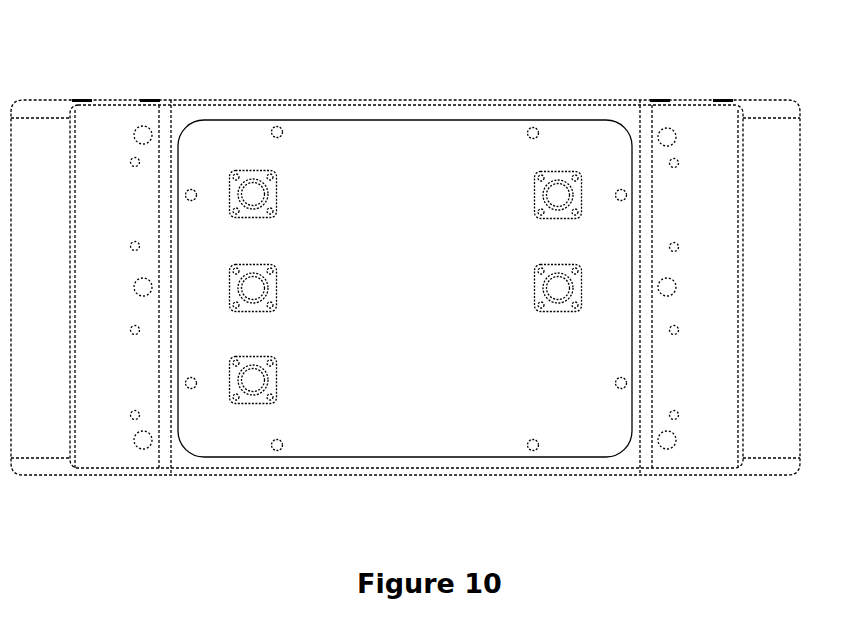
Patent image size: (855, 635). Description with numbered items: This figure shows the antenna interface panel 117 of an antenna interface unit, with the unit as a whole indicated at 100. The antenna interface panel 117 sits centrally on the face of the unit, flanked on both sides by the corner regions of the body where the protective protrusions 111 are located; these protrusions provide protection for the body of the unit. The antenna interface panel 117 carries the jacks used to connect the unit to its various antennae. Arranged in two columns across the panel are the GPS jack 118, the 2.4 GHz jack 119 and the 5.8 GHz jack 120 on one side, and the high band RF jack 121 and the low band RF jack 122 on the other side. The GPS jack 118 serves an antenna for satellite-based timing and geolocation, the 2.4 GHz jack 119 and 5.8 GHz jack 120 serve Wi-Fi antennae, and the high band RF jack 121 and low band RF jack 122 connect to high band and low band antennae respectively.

The electronics enclosure assembly 100 is at (515, 75).
The protective protrusions 111 is at (65, 152).
The antenna interface panel 117 is at (439, 407).
The GPS jack 118 is at (273, 202).
The 2.4 GHz jack 119 is at (273, 290).
The 5.8 GHz jack 120 is at (273, 380).
The high band RF jack 121 is at (538, 198).
The low band RF jack 122 is at (538, 286).